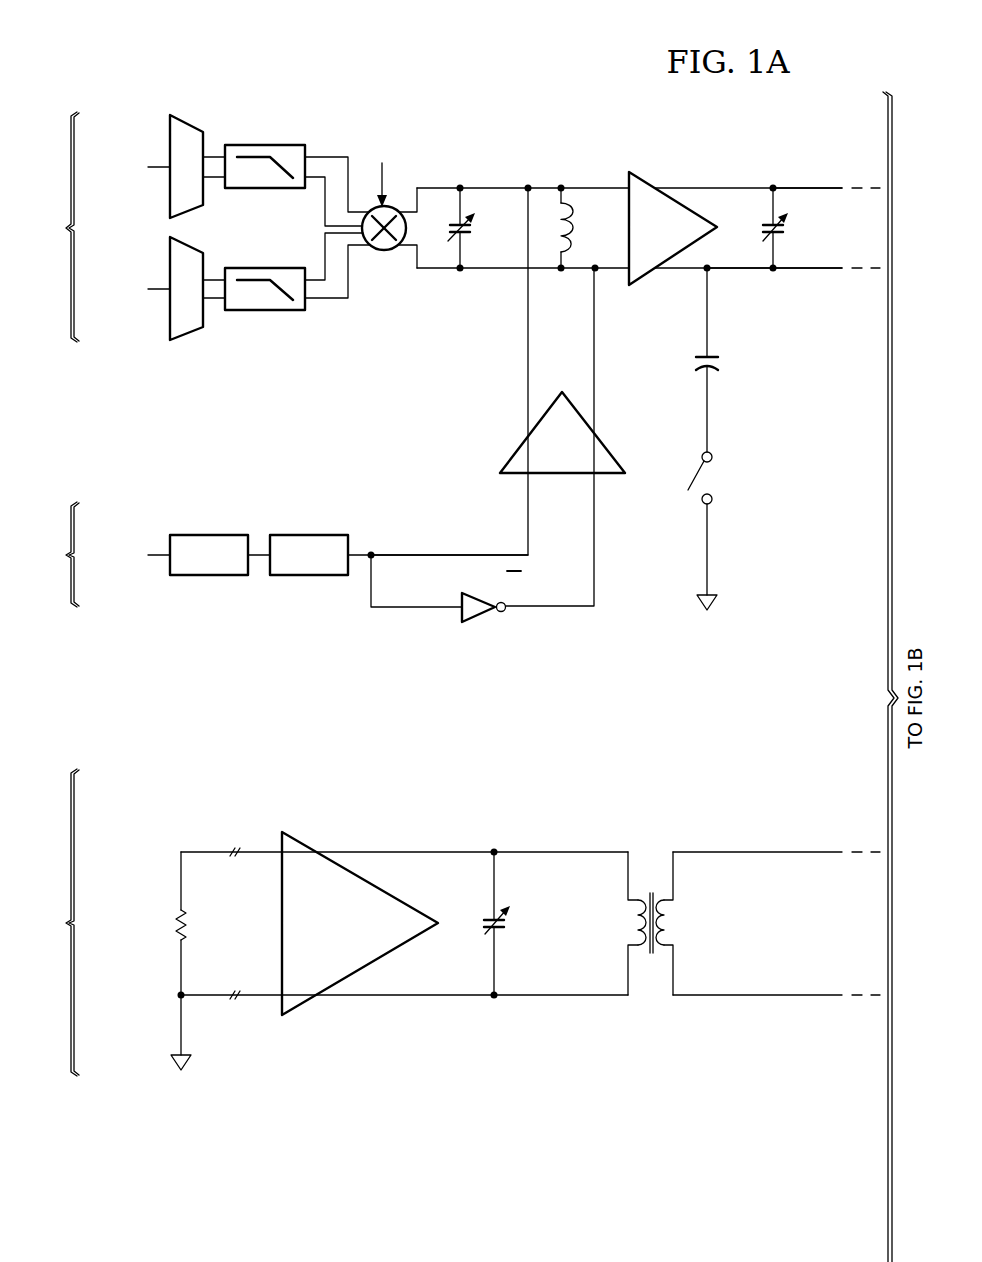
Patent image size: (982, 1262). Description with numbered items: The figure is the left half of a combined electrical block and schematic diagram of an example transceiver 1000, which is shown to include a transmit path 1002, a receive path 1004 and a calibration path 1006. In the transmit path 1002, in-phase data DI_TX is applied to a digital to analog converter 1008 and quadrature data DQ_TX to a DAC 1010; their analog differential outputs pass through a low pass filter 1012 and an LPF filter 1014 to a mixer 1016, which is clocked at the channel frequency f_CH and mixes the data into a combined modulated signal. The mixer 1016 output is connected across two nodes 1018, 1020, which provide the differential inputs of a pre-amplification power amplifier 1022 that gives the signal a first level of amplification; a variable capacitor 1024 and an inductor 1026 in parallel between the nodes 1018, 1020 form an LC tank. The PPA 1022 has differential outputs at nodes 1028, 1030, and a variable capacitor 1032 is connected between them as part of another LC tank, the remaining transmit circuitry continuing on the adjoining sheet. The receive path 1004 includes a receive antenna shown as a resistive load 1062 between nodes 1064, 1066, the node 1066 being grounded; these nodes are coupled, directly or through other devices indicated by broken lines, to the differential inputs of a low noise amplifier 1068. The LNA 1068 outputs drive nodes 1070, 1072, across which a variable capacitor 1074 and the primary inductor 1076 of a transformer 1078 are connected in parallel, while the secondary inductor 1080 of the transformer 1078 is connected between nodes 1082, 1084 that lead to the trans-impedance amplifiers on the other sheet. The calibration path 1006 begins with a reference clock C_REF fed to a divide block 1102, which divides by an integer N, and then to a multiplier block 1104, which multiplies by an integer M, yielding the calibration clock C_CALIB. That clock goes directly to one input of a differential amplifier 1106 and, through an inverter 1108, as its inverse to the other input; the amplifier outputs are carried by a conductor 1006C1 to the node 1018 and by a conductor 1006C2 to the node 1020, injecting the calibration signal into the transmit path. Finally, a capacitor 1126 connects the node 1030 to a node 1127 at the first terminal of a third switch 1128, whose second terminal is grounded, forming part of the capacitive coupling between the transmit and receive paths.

The transceiver 1000 is at (291, 66).
The transmit path 1002 is at (86, 227).
The receive path 1004 is at (40, 922).
The calibration path 1006 is at (86, 554).
The digital to analog converter 1008 is at (191, 116).
The DAC 1010 is at (190, 333).
The low pass filter 1012 is at (258, 145).
The LPF filter 1014 is at (263, 310).
The mixer 1016 is at (393, 250).
The node 1018 is at (493, 187).
The node 1020 is at (417, 255).
The pre-amplification power amplifier 1022 is at (642, 177).
The variable capacitor 1024 is at (448, 228).
The inductor 1026 is at (592, 216).
The node 1028 is at (808, 187).
The node 1030 is at (740, 273).
The variable capacitor 1032 is at (788, 228).
The resistive load 1062 is at (173, 918).
The node 1064 is at (208, 850).
The node 1066 is at (220, 997).
The low noise amplifier 1068 is at (331, 940).
The node 1070 is at (560, 848).
The node 1072 is at (560, 997).
The variable capacitor 1074 is at (503, 925).
The primary inductor 1076 is at (635, 897).
The transformer 1078 is at (652, 897).
The secondary inductor 1080 is at (665, 952).
The node 1082 is at (733, 850).
The node 1084 is at (735, 997).
The divide block 1102 is at (203, 578).
The multiplier block 1104 is at (310, 578).
The differential amplifier 1106 is at (512, 450).
The inverter 1108 is at (455, 613).
The capacitor 1126 is at (720, 361).
The node 1127 is at (709, 408).
The third switch 1128 is at (703, 478).
The conductor 1006C1 is at (528, 388).
The conductor 1006C2 is at (594, 347).